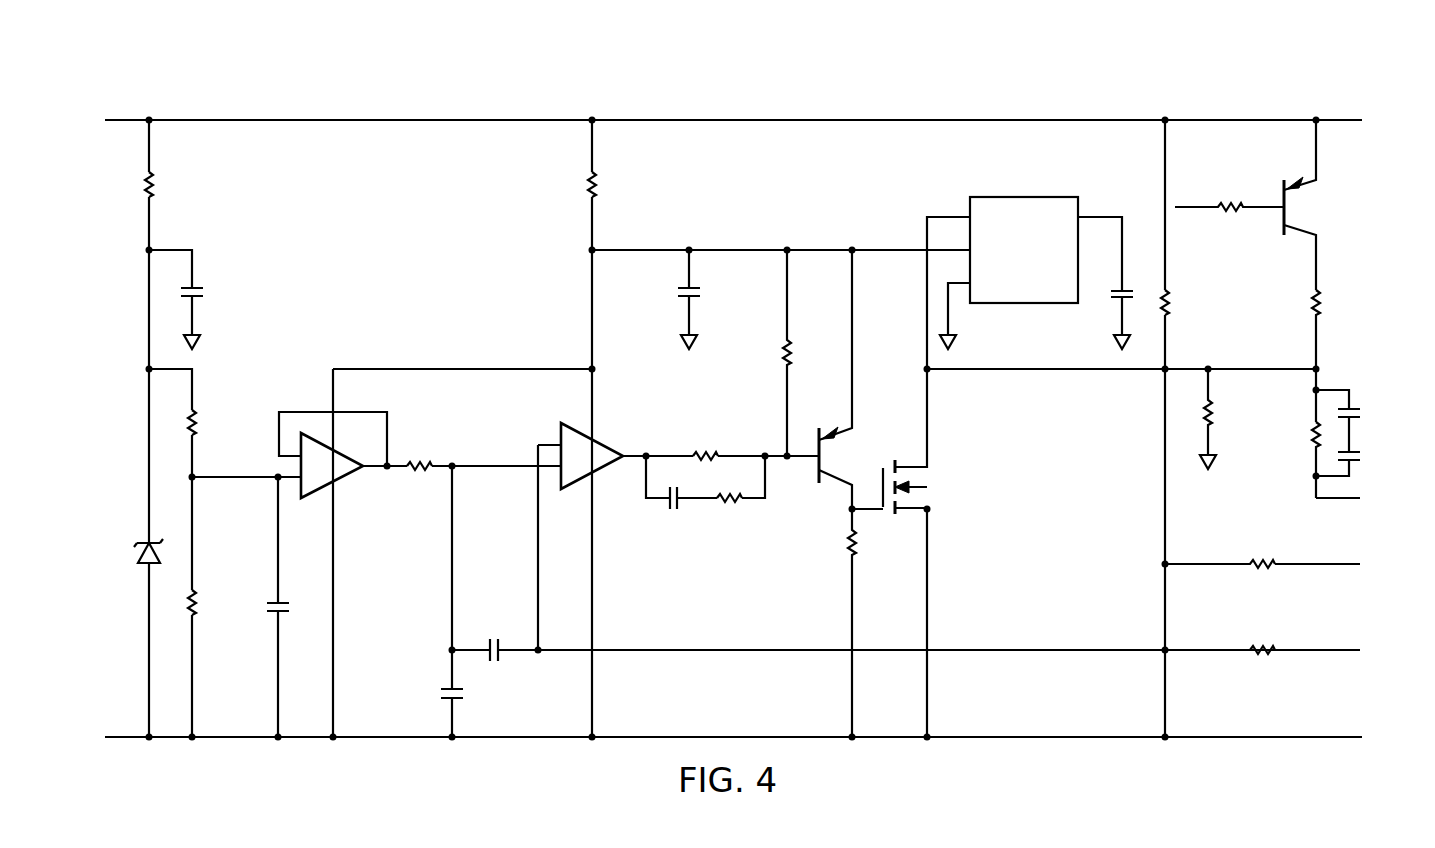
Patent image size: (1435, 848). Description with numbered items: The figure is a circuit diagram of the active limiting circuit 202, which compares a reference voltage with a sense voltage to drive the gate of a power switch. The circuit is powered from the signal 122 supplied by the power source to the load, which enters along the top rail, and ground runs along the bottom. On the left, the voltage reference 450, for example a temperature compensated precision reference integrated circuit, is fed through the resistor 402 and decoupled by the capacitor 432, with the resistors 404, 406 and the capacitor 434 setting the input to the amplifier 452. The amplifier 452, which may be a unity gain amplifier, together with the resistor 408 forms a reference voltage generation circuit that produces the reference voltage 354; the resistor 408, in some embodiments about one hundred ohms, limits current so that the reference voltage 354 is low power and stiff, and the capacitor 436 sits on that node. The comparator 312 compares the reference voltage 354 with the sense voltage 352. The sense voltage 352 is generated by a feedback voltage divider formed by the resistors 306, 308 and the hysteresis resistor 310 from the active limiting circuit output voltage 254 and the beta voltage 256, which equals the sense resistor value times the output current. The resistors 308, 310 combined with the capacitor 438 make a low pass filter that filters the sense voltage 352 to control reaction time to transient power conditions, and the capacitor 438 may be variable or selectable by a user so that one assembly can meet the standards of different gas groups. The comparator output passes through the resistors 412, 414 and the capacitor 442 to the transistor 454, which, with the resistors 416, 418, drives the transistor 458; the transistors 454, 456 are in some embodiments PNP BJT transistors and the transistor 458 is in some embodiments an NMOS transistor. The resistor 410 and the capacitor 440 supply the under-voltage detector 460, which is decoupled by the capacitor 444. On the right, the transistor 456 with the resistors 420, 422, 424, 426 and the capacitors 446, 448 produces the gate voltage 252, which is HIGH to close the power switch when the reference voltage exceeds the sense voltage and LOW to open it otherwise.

The active limiting circuit 202 is at (440, 75).
The signal 122 is at (128, 118).
The resistor 402 is at (146, 183).
The capacitor 432 is at (204, 292).
The resistor 404 is at (200, 420).
The resistor 406 is at (200, 604).
The voltage reference 450 is at (137, 553).
The capacitor 434 is at (270, 610).
The amplifier 452 is at (358, 480).
The resistor 408 is at (418, 470).
The reference voltage 354 is at (496, 470).
The capacitor 436 is at (440, 694).
The capacitor 438 is at (496, 664).
The comparator 312 is at (620, 470).
The resistor 410 is at (590, 184).
The capacitor 440 is at (678, 293).
The resistor 416 is at (784, 350).
The resistor 412 is at (702, 450).
The capacitor 442 is at (670, 506).
The resistor 414 is at (730, 504).
The transistor 454 is at (817, 472).
The resistor 418 is at (848, 546).
The transistor 458 is at (880, 474).
The under-voltage detector 460 is at (1030, 197).
The capacitor 444 is at (1110, 294).
The resistor 306 is at (1170, 302).
The resistor 420 is at (1234, 203).
The transistor 456 is at (1282, 216).
The resistor 422 is at (1322, 302).
The resistor 424 is at (1214, 412).
The resistor 426 is at (1312, 436).
The capacitor 446 is at (1363, 408).
The capacitor 448 is at (1364, 460).
The gate voltage 252 is at (1340, 502).
The hysteresis resistor 310 is at (1266, 568).
The active limiting circuit output voltage 254 is at (1322, 567).
The resistor 308 is at (1266, 654).
The beta voltage 256 is at (1322, 653).
The sense voltage 352 is at (1046, 654).